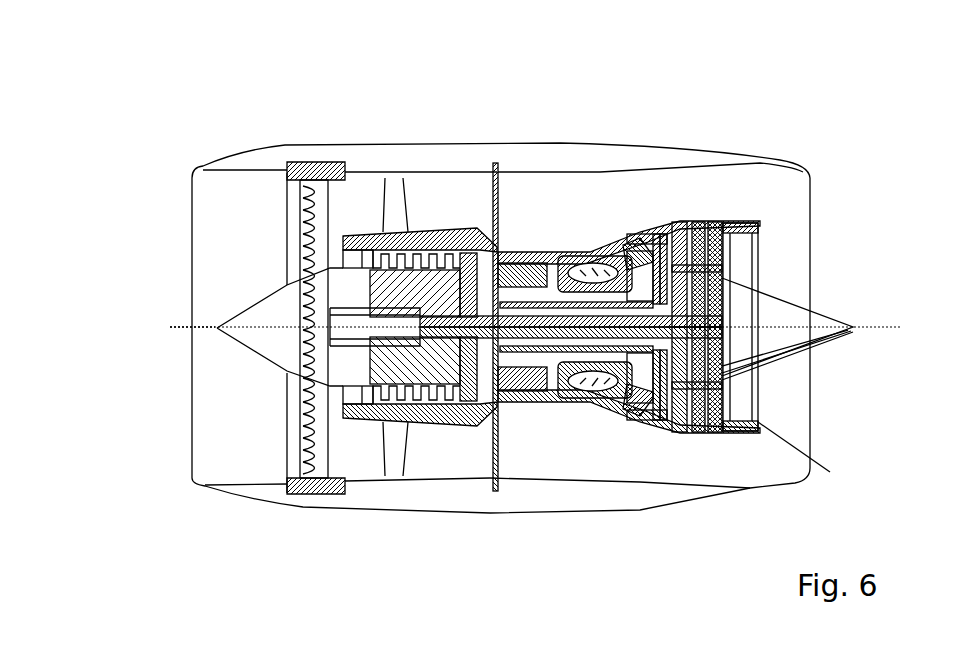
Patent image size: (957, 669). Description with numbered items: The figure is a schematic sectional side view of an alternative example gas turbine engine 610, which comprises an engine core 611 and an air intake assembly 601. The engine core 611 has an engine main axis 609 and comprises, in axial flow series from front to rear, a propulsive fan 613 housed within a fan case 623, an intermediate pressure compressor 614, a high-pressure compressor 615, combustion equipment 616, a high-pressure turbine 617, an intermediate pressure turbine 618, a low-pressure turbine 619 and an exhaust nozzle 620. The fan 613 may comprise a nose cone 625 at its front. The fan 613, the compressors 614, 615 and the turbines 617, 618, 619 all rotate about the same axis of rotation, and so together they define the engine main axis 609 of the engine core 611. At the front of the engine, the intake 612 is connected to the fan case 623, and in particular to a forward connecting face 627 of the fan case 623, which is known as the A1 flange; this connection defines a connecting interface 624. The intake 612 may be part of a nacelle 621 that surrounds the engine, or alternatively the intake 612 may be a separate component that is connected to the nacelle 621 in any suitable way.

The air intake assembly 601 is at (180, 358).
The engine main axis 609 is at (187, 330).
The gas turbine engine 610 is at (166, 86).
The engine core 611 is at (569, 222).
The intake 612 is at (228, 220).
The propulsive fan 613 is at (310, 455).
The intermediate pressure compressor 614 is at (428, 406).
The high-pressure compressor 615 is at (512, 267).
The combustion equipment 616 is at (593, 390).
The high-pressure turbine 617 is at (627, 397).
The intermediate pressure turbine 618 is at (657, 243).
The low-pressure turbine 619 is at (667, 420).
The exhaust nozzle 620 is at (830, 472).
The nacelle 621 is at (607, 155).
The fan case 623 is at (326, 172).
The connecting interface 624 is at (288, 150).
The nose cone 625 is at (277, 347).
The forward connecting face 627 is at (280, 163).